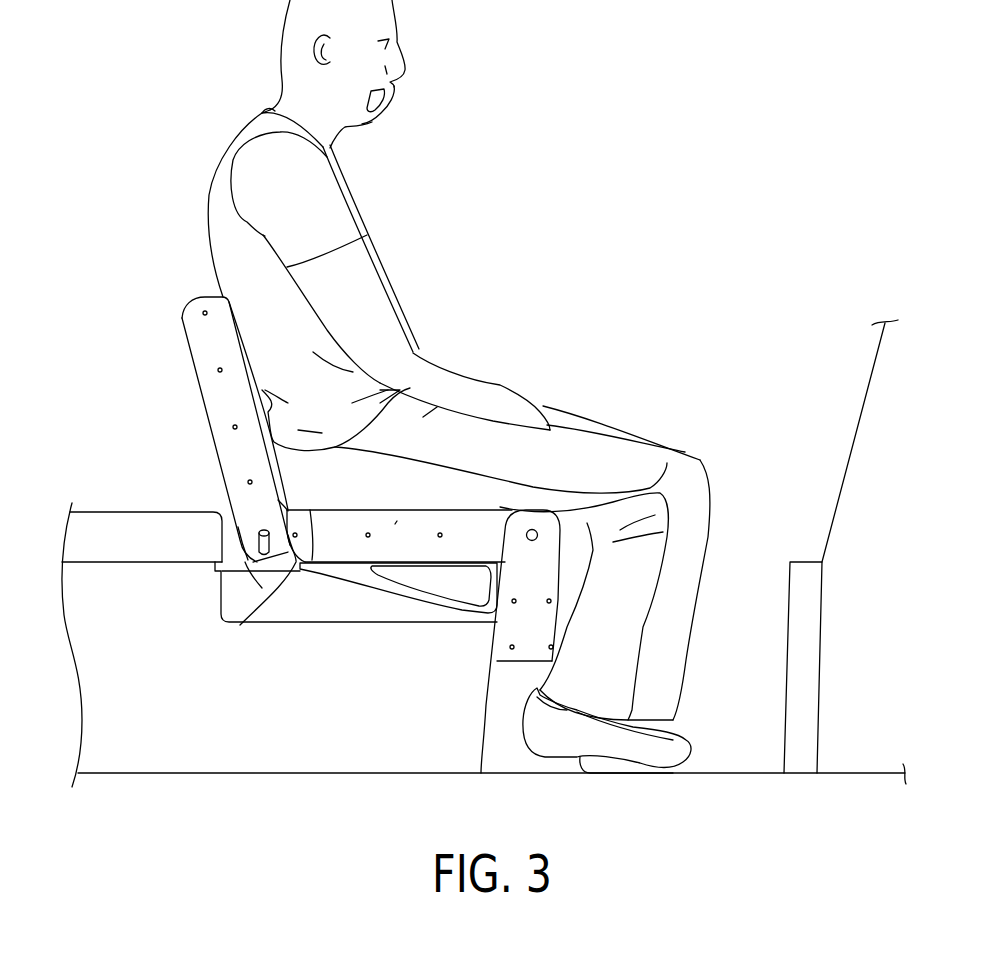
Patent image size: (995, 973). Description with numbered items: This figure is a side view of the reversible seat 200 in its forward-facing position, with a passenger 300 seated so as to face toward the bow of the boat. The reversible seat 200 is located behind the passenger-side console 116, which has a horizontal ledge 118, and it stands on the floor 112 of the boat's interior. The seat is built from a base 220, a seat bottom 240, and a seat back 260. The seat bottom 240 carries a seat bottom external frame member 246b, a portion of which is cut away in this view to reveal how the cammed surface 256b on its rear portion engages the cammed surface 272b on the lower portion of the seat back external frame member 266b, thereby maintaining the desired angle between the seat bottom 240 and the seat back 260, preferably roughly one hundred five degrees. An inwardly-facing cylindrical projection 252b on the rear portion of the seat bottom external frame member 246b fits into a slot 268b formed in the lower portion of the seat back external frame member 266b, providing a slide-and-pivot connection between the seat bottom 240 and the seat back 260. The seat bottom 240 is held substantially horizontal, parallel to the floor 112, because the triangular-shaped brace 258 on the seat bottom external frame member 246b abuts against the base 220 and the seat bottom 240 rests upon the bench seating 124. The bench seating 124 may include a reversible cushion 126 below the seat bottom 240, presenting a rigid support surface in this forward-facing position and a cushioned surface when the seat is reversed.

The floor 112 is at (748, 772).
The passenger-side console 116 is at (870, 382).
The horizontal ledge 118 is at (809, 560).
The bench seating 124 is at (98, 707).
The reversible cushion 126 is at (311, 607).
The reversible seat 200 is at (116, 262).
The base 220 is at (480, 719).
The seat bottom 240 is at (404, 494).
The seat bottom external frame member 246b is at (397, 523).
The inwardly-facing cylindrical projection 252b is at (237, 525).
The cammed surface 256b is at (278, 500).
The triangular-shaped brace 258 is at (460, 608).
The seat back 260 is at (216, 429).
The seat back external frame member 266b is at (215, 407).
The slot 268b is at (245, 562).
The cammed surface 272b is at (240, 625).
The passenger 300 is at (367, 212).